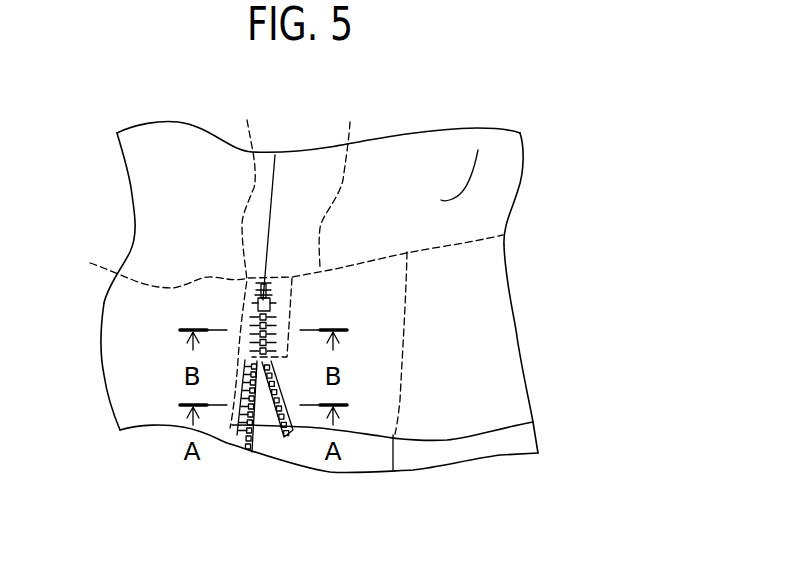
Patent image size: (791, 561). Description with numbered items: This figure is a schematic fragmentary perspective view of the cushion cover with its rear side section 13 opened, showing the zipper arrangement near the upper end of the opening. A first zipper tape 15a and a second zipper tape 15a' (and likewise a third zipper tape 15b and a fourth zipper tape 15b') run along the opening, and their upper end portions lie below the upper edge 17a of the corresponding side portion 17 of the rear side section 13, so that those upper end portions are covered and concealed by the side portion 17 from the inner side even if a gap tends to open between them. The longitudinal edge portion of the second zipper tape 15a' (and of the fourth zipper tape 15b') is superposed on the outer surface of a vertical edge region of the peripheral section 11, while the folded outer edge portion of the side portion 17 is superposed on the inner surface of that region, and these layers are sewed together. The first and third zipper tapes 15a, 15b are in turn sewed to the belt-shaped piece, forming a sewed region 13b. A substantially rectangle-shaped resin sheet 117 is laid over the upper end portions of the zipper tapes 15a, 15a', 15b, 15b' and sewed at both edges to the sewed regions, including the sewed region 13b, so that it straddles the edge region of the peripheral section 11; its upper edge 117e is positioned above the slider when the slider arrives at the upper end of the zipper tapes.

The peripheral section 11 is at (163, 182).
The rear side section 13 is at (490, 378).
The sewed region 13b is at (478, 150).
The first zipper tape 15a is at (347, 438).
The third zipper tape 15b is at (347, 438).
The second zipper tape 15a' is at (152, 436).
The fourth zipper tape 15b' is at (152, 436).
The side portion 17 is at (383, 448).
The upper edge 17a is at (363, 263).
The resin sheet 117 is at (274, 261).
The upper edge 117e is at (253, 260).